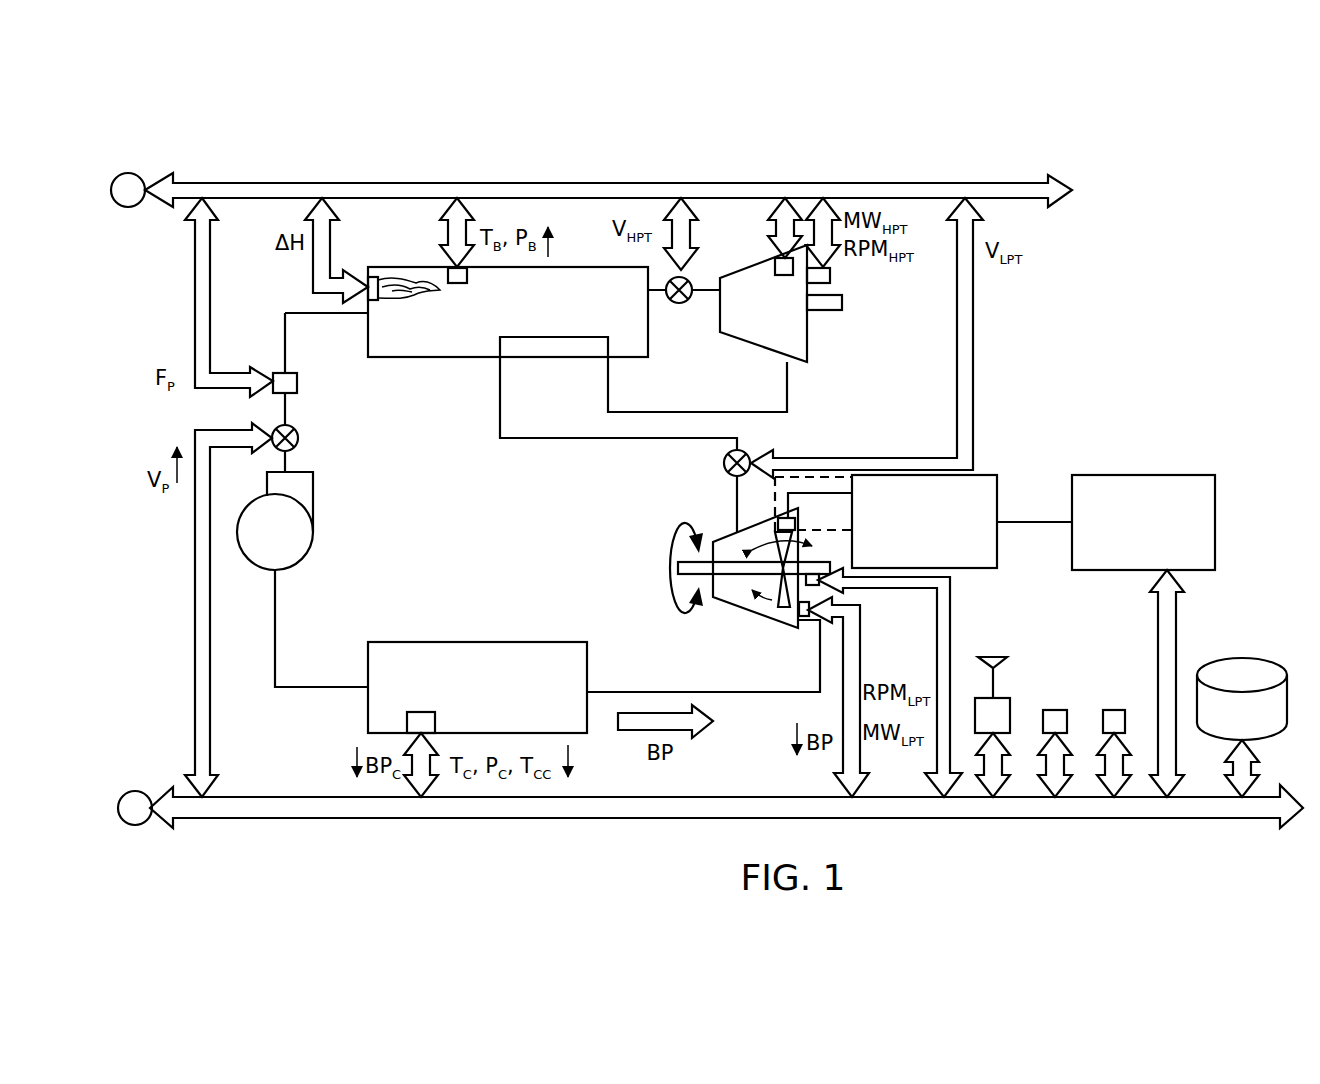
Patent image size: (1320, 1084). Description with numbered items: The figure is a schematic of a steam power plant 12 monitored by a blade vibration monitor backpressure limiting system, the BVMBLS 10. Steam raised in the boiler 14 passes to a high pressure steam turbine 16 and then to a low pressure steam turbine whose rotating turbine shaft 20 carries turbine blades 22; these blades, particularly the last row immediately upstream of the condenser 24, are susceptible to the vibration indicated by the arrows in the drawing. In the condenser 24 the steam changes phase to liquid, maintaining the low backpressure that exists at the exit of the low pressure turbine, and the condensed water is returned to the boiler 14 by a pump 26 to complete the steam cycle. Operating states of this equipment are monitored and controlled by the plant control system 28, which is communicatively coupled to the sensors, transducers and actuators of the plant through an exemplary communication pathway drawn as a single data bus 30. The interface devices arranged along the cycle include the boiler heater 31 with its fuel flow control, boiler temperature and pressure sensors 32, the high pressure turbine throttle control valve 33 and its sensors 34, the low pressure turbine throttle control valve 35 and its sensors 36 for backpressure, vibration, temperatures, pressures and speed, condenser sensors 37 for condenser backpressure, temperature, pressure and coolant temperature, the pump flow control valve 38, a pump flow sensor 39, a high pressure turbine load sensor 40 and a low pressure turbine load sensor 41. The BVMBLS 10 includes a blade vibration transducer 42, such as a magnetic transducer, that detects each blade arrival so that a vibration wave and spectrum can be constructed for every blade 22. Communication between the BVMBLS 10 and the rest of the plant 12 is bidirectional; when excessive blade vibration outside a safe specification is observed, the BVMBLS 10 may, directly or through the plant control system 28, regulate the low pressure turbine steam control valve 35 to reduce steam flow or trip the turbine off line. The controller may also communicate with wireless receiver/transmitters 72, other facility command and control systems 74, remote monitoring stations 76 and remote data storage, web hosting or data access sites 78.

The blade vibration monitor backpressure limiting system (BVMBLS) 10 is at (970, 558).
The steam power plant 12 is at (1078, 258).
The boiler 14 is at (408, 267).
The high pressure steam turbine 16 is at (750, 327).
The rotating turbine shaft 20 is at (683, 612).
The turbine blades 22 is at (783, 607).
The condenser 24 is at (478, 655).
The pump 26 is at (247, 532).
The plant control system 28 is at (1085, 482).
The data bus 30 is at (607, 190).
The boiler heater 31 is at (387, 300).
The boiler temperature and pressure sensors 32 is at (467, 283).
The high pressure turbine throttle control valve 33 is at (675, 304).
The high pressure turbine sensors 34 is at (778, 258).
The low pressure turbine throttle control valve 35 is at (724, 461).
The low pressure turbine sensors 36 is at (803, 617).
The condenser sensors 37 is at (415, 713).
The pump flow control valve 38 is at (298, 436).
The pump flow sensor 39 is at (297, 385).
The high pressure turbine load sensor 40 is at (830, 278).
The low pressure turbine load sensor 41 is at (819, 578).
The blade vibration transducer 42 is at (778, 522).
The wireless receiver/transmitters 72 is at (1002, 702).
The other facility command and control systems 74 is at (1057, 716).
The remote monitoring stations 76 is at (1117, 716).
The remote data storage/web hosting/data access sites 78 is at (1268, 668).